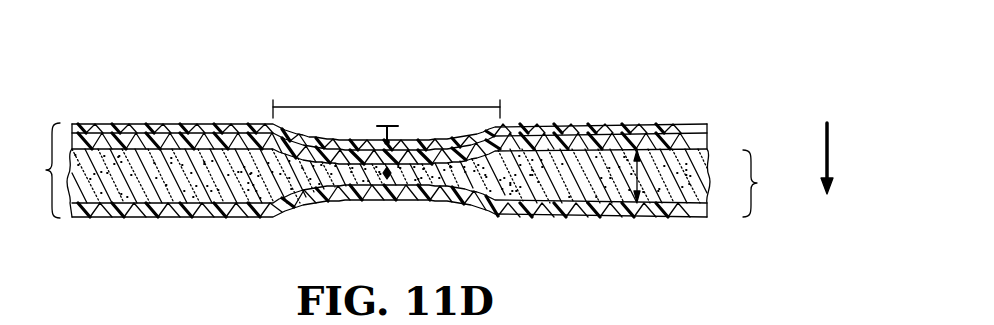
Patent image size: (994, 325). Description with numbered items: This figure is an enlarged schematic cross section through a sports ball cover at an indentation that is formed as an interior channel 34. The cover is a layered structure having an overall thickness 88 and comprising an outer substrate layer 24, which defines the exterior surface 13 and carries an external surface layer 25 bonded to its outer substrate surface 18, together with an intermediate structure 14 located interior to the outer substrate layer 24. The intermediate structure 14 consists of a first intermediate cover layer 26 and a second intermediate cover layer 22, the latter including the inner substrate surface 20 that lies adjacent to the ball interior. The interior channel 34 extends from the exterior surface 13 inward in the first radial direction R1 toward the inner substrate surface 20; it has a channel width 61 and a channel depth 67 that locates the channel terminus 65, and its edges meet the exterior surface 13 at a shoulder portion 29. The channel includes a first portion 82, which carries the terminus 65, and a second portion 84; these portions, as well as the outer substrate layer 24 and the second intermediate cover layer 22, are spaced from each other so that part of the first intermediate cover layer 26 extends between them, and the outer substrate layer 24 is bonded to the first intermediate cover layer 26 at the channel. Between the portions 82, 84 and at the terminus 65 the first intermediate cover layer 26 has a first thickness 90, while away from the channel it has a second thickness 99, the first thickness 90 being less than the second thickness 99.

The exterior surface 13 is at (192, 110).
The shoulder portion 29 is at (267, 110).
The first portion 82 is at (331, 110).
The interior channel 34 is at (441, 65).
The channel depth 67 is at (397, 137).
The channel width 61 is at (424, 106).
The outer substrate surface 18 is at (598, 110).
The external surface layer 25 is at (657, 126).
The outer substrate layer 24 is at (700, 142).
The intermediate structure 14 is at (757, 183).
The first radial direction R1 is at (818, 135).
The first intermediate cover layer 26 is at (707, 185).
The second intermediate cover layer 22 is at (697, 217).
The second thickness 99 is at (640, 175).
The inner substrate surface 20 is at (553, 231).
The second portion 84 is at (305, 244).
The first thickness 90 is at (350, 184).
The channel terminus 65 is at (413, 148).
The thickness 88 is at (365, 170).